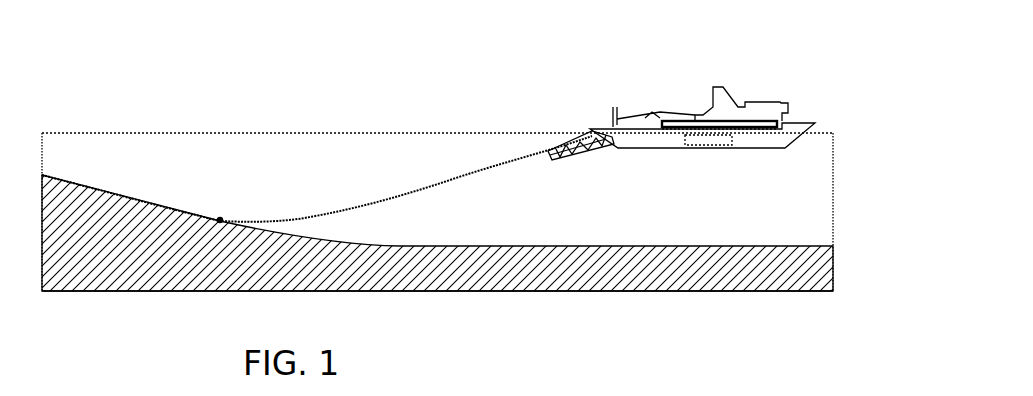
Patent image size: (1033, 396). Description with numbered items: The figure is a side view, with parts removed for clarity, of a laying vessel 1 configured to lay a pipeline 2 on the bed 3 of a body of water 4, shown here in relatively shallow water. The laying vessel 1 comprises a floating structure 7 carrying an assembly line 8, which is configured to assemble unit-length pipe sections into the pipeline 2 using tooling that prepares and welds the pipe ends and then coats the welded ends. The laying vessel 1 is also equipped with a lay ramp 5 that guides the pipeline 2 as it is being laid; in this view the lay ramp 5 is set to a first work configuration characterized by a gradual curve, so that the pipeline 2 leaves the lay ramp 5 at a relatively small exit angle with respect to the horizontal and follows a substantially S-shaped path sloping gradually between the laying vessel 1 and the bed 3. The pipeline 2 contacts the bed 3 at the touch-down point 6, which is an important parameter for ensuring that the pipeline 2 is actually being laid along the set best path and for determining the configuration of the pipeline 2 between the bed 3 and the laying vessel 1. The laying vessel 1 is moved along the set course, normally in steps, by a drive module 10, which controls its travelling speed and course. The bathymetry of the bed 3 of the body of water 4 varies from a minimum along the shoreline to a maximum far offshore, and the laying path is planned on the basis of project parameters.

The laying vessel 1 is at (702, 111).
The pipeline 2 is at (393, 201).
The bed 3 is at (536, 282).
The body of water 4 is at (443, 158).
The lay ramp 5 is at (551, 139).
The touch-down point 6 is at (220, 218).
The floating structure 7 is at (652, 140).
The assembly line 8 is at (768, 128).
The drive module 10 is at (715, 143).